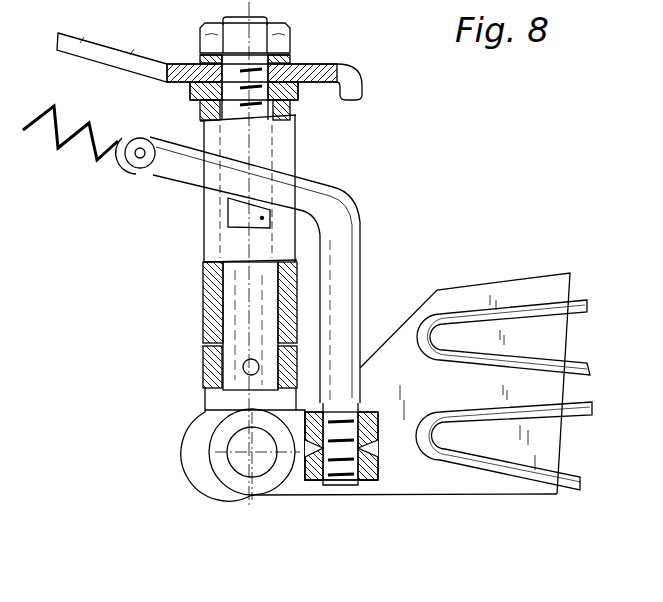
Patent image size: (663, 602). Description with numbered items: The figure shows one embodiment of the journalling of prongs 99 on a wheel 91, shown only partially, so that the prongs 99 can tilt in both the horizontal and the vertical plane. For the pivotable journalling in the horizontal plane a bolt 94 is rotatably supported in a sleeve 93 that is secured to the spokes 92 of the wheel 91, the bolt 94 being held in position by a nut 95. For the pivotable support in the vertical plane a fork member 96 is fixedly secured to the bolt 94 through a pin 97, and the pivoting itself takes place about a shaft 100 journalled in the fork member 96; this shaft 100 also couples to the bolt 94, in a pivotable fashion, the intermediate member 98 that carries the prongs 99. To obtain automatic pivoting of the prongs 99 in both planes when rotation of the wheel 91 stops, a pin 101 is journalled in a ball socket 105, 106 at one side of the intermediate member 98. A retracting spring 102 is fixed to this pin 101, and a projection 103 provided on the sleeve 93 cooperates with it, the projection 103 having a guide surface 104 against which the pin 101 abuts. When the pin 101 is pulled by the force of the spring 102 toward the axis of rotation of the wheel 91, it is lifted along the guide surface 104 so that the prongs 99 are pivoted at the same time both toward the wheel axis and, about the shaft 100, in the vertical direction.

The wheel 91 is at (92, 265).
The spokes 92 is at (335, 62).
The sleeve 93 is at (202, 275).
The bolt 94 is at (233, 312).
The nut 95 is at (289, 30).
The fork member 96 is at (218, 407).
The pin 97 is at (243, 368).
The intermediate member 98 is at (458, 480).
The prongs 99 is at (572, 487).
The shaft 100 is at (240, 497).
The pin 101 is at (350, 218).
The retracting spring 102 is at (98, 163).
The projection 103 is at (262, 218).
The guide surface 104 is at (260, 203).
The ball socket 105 is at (378, 478).
The ball socket 106 is at (306, 484).